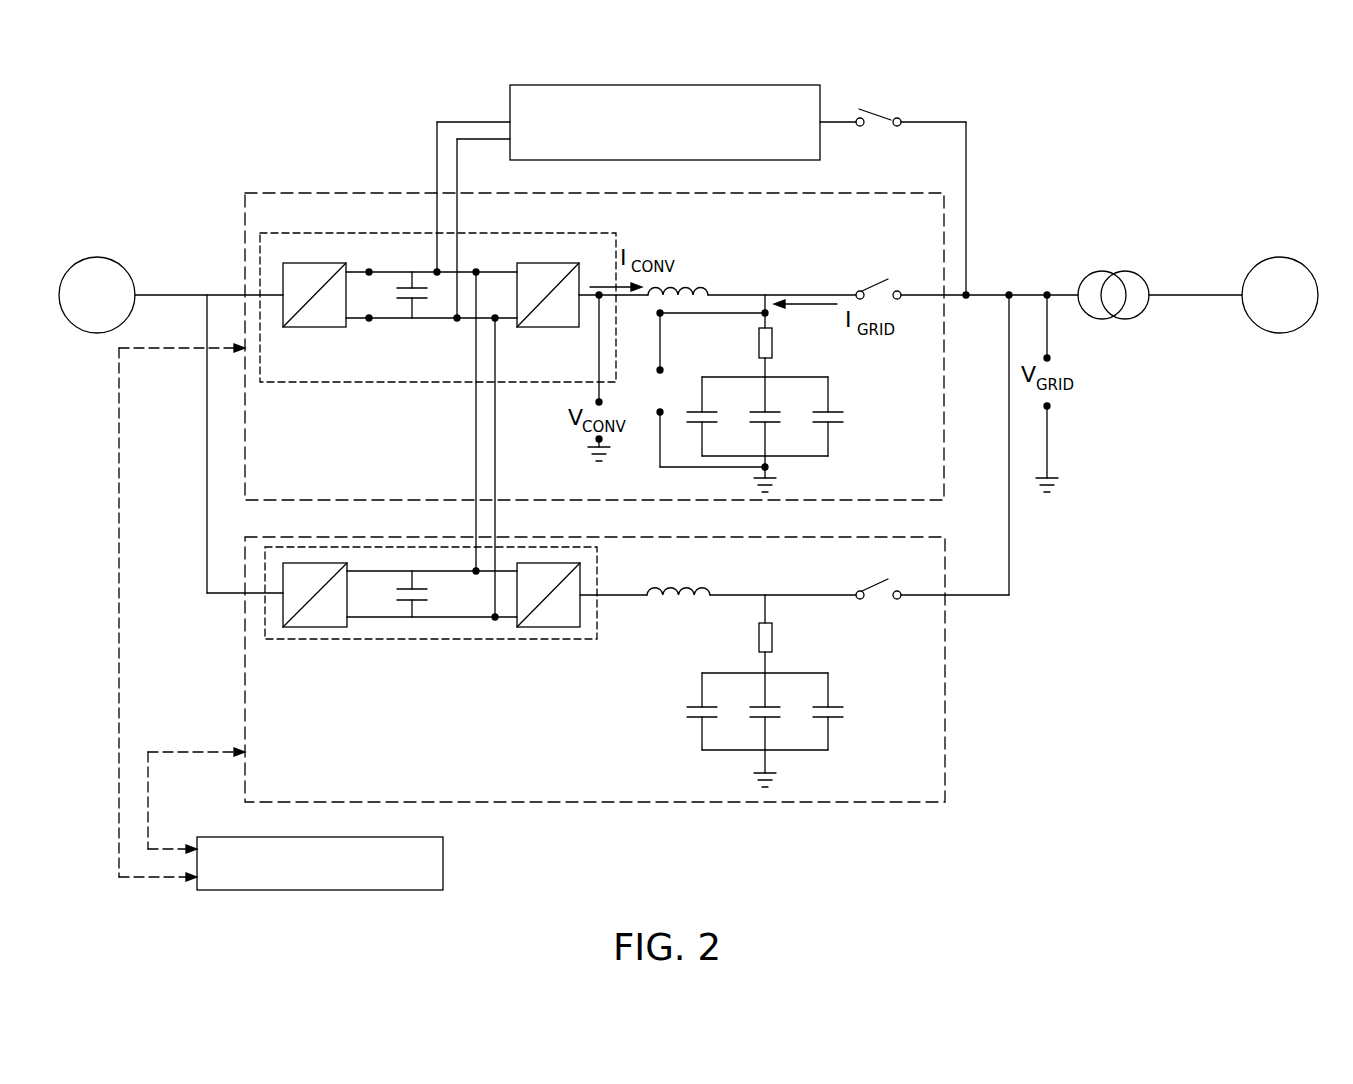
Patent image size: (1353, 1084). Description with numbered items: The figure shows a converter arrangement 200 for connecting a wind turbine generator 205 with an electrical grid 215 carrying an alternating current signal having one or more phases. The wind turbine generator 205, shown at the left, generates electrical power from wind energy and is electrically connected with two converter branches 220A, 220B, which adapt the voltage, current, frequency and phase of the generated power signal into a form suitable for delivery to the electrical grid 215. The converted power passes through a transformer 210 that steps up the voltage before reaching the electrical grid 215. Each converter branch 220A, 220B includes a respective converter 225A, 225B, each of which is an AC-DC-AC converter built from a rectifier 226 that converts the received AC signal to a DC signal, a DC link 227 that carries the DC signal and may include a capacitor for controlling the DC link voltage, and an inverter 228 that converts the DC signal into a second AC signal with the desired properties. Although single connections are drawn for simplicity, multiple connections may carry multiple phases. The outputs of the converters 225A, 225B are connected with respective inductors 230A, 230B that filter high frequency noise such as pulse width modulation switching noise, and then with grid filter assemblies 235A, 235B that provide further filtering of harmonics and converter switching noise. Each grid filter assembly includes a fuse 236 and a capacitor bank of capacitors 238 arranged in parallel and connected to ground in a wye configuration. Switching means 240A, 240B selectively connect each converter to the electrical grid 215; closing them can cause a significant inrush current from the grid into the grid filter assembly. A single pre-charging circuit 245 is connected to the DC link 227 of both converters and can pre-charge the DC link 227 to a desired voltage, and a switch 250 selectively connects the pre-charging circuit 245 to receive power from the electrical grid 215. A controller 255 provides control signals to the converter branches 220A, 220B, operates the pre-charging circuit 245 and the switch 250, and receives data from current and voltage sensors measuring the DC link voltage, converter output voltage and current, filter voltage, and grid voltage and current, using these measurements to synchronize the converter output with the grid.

The converter arrangement 200 is at (1213, 88).
The wind turbine generator 205 is at (97, 257).
The transformer 210 is at (1140, 272).
The electrical grid 215 is at (1282, 257).
The converter branch 220A is at (245, 434).
The converter branch 220B is at (245, 686).
The converter 225A is at (597, 233).
The converter 225B is at (548, 546).
The rectifier 226 is at (327, 327).
The DC link 227 is at (388, 326).
The inverter 228 is at (559, 327).
The inductor 230A is at (702, 282).
The inductor 230B is at (673, 580).
The grid filter assembly 235A is at (781, 393).
The grid filter assembly 235B is at (820, 666).
The fuse 236 is at (757, 337).
The capacitors 238 is at (842, 442).
The switching means 240A is at (888, 277).
The switching means 240B is at (887, 578).
The pre-charging circuit 245 is at (646, 122).
The switch 250 is at (877, 110).
The controller 255 is at (320, 863).